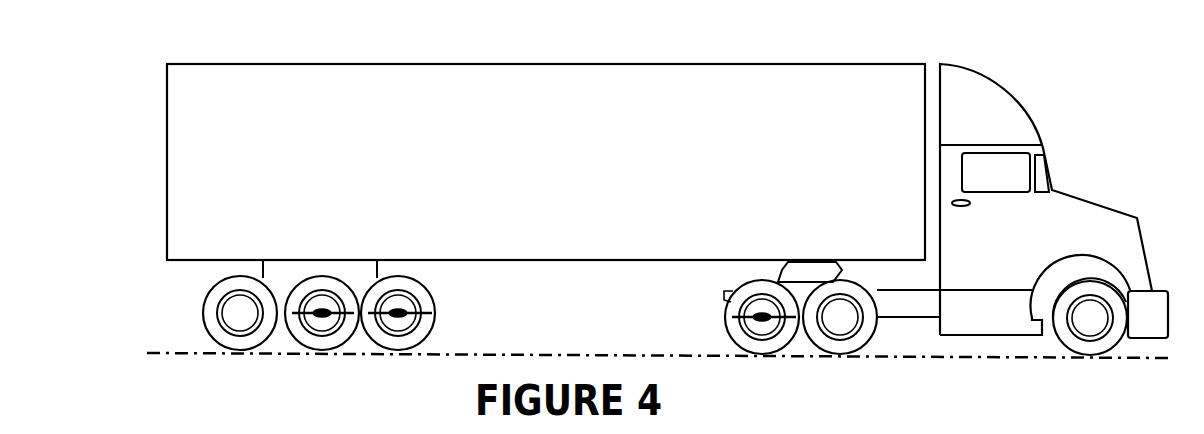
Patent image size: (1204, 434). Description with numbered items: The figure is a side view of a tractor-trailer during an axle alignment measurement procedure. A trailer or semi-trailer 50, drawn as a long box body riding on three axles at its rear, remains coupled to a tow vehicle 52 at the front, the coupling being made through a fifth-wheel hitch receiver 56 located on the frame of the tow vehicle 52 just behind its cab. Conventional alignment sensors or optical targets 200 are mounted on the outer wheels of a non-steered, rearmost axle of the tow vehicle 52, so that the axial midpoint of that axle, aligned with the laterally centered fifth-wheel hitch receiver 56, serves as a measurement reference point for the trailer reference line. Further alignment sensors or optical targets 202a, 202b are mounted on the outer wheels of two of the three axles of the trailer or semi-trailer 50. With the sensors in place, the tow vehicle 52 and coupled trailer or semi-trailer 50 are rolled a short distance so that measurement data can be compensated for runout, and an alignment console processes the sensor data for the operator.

The trailer or semi-trailer 50 is at (550, 177).
The tow vehicle 52 is at (1010, 255).
The fifth-wheel hitch receiver 56 is at (843, 269).
The alignment sensors or optical targets 200 is at (792, 347).
The alignment sensors or optical targets 202a is at (371, 345).
The alignment sensors or optical targets 202b is at (298, 335).